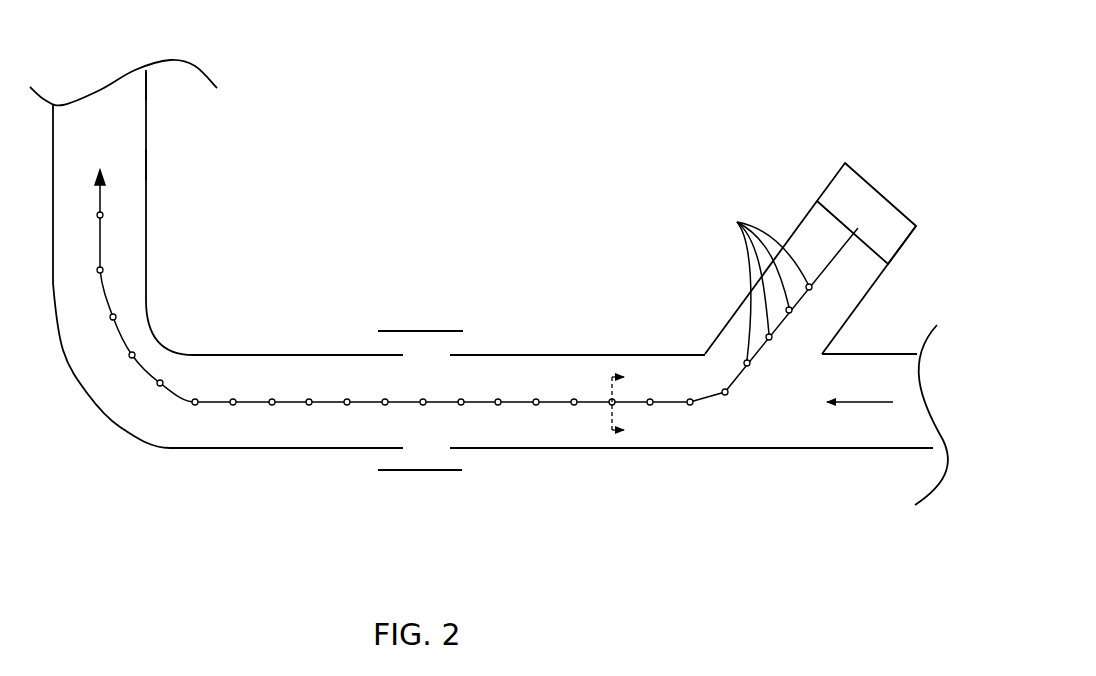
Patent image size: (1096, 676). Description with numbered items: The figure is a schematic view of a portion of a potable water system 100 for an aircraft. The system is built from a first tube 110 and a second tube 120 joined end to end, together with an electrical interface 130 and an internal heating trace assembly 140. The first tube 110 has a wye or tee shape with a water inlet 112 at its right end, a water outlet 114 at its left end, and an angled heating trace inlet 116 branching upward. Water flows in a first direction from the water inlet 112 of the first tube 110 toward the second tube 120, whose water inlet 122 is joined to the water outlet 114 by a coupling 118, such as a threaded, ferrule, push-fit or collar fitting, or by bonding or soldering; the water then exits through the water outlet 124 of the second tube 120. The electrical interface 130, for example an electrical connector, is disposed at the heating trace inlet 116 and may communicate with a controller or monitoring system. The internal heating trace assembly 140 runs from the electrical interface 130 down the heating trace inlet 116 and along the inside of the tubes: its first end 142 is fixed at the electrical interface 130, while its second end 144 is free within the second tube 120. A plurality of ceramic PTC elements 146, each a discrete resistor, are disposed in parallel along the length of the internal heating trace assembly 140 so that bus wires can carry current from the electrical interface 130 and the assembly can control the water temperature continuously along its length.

The water system 100 is at (425, 108).
The first tube 110 is at (587, 355).
The water inlet 112 is at (932, 449).
The water outlet 114 is at (452, 447).
The heating trace inlet 116 is at (845, 217).
The coupling 118 is at (423, 331).
The second tube 120 is at (146, 163).
The water inlet 122 is at (403, 355).
The water outlet 124 is at (146, 75).
The electrical interface 130 is at (857, 198).
The internal heating trace assembly 140 is at (260, 395).
The first end 142 is at (867, 235).
The second end 144 is at (103, 180).
The plurality of ceramic PTC elements 146 is at (753, 288).